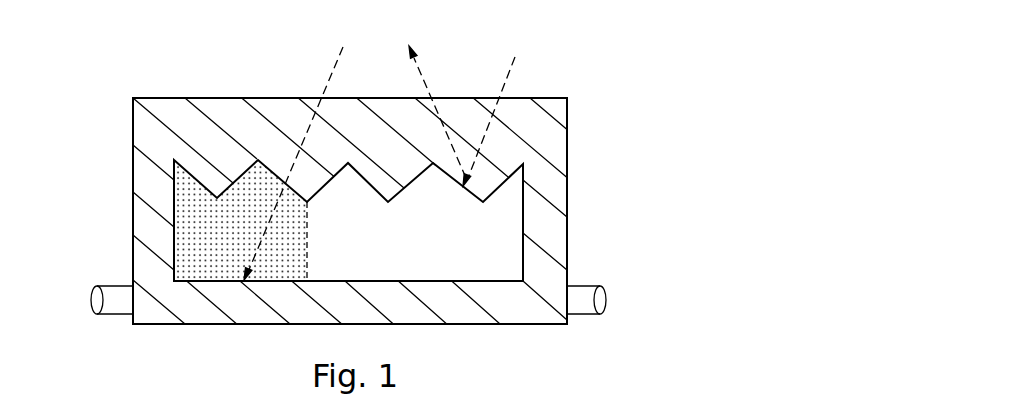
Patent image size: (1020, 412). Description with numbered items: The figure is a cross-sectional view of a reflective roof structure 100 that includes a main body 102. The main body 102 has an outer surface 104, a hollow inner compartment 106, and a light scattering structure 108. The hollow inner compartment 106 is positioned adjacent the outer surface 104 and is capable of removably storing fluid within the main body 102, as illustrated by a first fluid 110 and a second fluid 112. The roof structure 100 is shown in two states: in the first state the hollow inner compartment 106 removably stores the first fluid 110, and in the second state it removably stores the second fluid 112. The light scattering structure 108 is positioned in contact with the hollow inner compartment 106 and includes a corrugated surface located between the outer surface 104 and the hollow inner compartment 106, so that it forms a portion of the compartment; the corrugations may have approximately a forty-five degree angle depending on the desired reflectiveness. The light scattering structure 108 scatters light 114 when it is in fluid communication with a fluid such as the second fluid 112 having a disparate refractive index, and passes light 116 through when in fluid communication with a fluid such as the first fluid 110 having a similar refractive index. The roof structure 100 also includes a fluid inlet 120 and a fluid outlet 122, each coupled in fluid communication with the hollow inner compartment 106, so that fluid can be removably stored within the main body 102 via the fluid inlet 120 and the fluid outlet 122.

The roof structure 100 is at (576, 56).
The main body 102 is at (122, 132).
The outer surface 104 is at (170, 98).
The hollow inner compartment 106 is at (523, 236).
The light scattering structure 108 is at (470, 194).
The first fluid 110 is at (249, 245).
The second fluid 112 is at (431, 245).
The light 114 is at (420, 73).
The light 116 is at (330, 50).
The fluid inlet 120 is at (117, 314).
The fluid outlet 122 is at (582, 314).